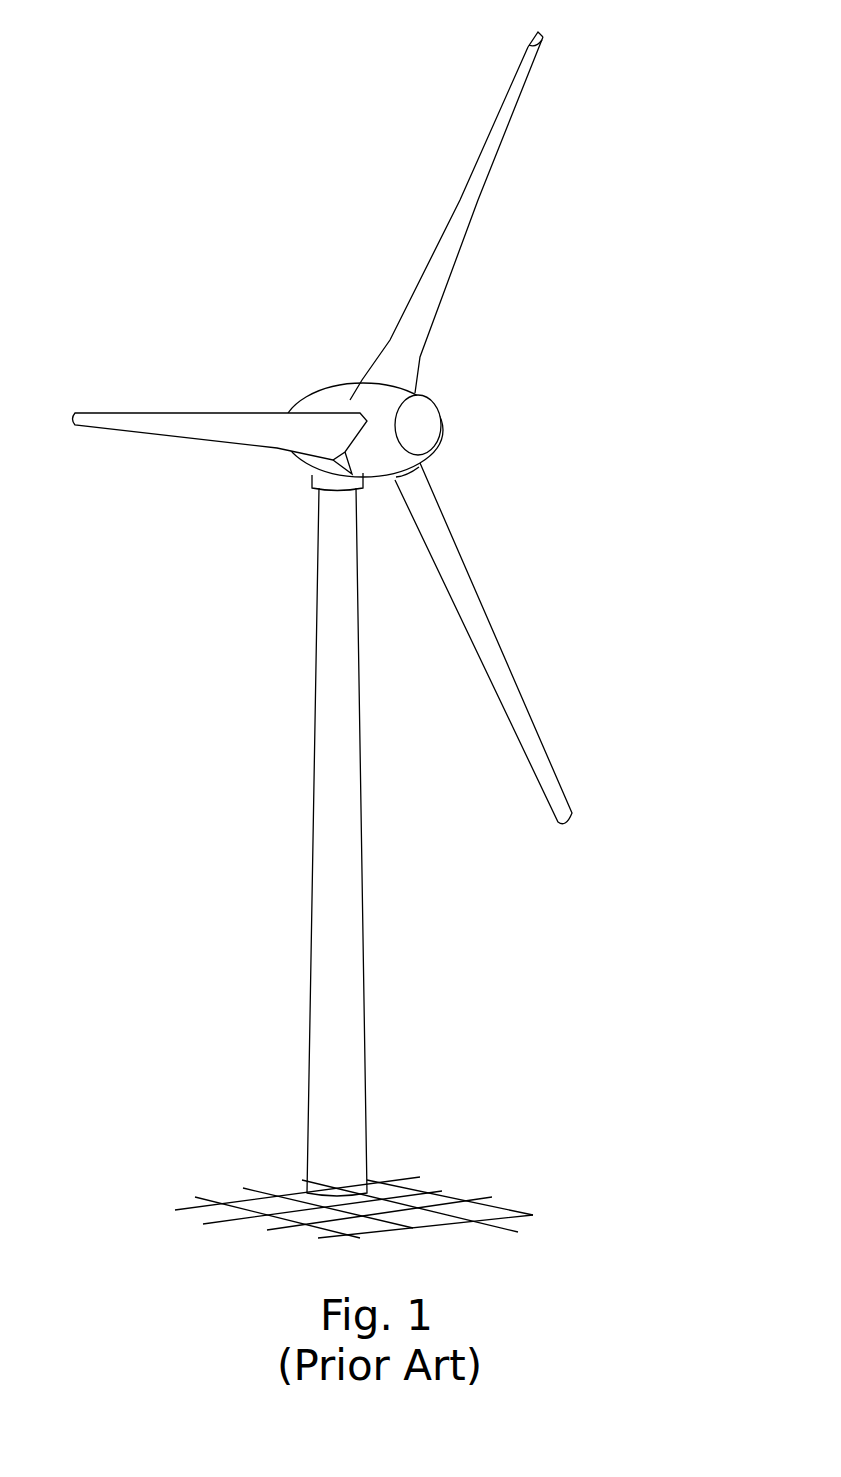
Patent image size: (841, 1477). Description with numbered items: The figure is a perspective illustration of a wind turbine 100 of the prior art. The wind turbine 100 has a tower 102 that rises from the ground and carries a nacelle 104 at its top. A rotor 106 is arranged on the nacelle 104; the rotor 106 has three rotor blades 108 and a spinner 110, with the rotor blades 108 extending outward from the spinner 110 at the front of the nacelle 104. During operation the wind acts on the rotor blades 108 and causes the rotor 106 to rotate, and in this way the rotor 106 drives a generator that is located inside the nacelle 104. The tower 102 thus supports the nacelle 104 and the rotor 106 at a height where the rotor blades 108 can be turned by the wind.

The wind turbine 100 is at (270, 562).
The tower 102 is at (343, 950).
The nacelle 104 is at (330, 398).
The rotor 106 is at (512, 343).
The rotor blades 108 is at (148, 418).
The spinner 110 is at (423, 427).